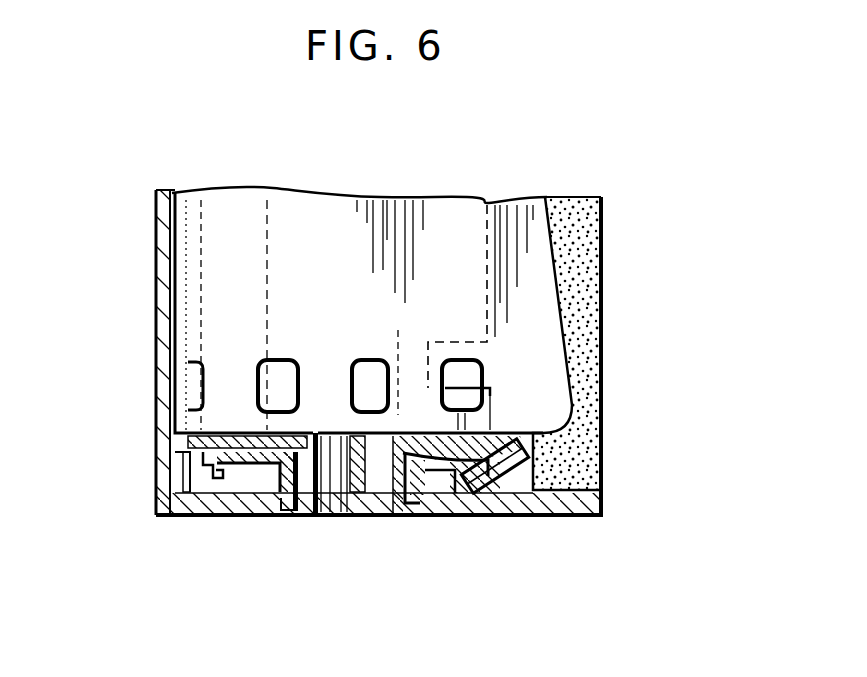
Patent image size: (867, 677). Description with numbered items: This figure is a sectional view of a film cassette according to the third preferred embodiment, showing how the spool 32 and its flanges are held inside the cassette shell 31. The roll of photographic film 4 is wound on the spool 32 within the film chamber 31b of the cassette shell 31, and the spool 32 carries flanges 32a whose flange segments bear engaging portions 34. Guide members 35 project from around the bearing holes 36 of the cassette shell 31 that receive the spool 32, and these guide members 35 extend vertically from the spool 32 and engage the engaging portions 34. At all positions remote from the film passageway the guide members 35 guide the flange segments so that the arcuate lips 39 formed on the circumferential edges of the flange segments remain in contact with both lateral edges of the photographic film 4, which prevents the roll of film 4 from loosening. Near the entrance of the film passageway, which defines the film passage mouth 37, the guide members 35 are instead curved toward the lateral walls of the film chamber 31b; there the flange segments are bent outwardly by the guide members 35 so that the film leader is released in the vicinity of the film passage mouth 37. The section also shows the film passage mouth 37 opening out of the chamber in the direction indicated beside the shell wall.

The photographic film 4 is at (383, 205).
The cassette shell 31 is at (156, 284).
The film chamber 31b is at (203, 481).
The spool 32 is at (312, 517).
The flange 32a is at (230, 447).
The engaging portion 34 is at (210, 487).
The guide member 35 is at (233, 483).
The bearing hole 36 is at (268, 478).
The film passage mouth 37 is at (605, 427).
The arcuate lip 39 is at (516, 432).